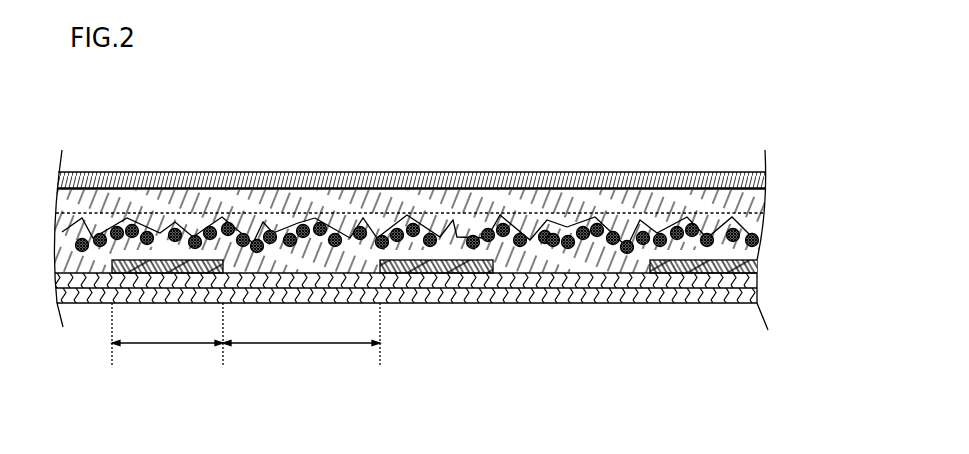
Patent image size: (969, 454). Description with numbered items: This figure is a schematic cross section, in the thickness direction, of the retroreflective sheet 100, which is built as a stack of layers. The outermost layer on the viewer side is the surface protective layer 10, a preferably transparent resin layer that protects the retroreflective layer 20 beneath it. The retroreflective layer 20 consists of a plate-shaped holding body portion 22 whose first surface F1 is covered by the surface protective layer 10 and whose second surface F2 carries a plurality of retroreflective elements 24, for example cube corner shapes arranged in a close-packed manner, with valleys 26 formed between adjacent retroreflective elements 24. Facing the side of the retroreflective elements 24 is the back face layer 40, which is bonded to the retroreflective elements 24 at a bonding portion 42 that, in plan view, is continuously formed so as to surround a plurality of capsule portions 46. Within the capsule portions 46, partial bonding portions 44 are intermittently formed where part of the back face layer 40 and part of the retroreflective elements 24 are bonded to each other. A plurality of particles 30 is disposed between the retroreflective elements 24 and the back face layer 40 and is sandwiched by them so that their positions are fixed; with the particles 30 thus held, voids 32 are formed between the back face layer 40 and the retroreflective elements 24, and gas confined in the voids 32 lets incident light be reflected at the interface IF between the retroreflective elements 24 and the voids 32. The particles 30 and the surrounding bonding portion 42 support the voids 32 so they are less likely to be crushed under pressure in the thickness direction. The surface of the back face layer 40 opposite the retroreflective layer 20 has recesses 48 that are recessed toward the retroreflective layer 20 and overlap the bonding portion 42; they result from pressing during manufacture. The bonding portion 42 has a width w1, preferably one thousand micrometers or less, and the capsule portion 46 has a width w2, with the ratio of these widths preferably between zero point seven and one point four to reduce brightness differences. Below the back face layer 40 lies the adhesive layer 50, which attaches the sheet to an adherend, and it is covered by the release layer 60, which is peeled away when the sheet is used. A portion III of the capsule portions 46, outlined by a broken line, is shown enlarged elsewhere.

The retroreflective sheet 100 is at (717, 148).
The surface protective layer 10 is at (497, 180).
The retroreflective layer 20 is at (457, 208).
The holding body portion 22 is at (757, 204).
The retroreflective elements 24 is at (745, 229).
The valleys 26 is at (708, 292).
The particles 30 is at (646, 278).
The voids 32 is at (598, 219).
The back face layer 40 is at (590, 245).
The bonding portion 42 is at (462, 221).
The partial bonding portions 44 is at (270, 222).
The capsule portions 46 is at (620, 222).
The recesses 48 is at (419, 277).
The adhesive layer 50 is at (537, 262).
The release layer 60 is at (492, 275).
The first surface F1 is at (345, 190).
The second surface F2 is at (409, 172).
The interface IF is at (597, 216).
The portion III is at (660, 172).
The width w1 is at (167, 336).
The width w2 is at (301, 336).